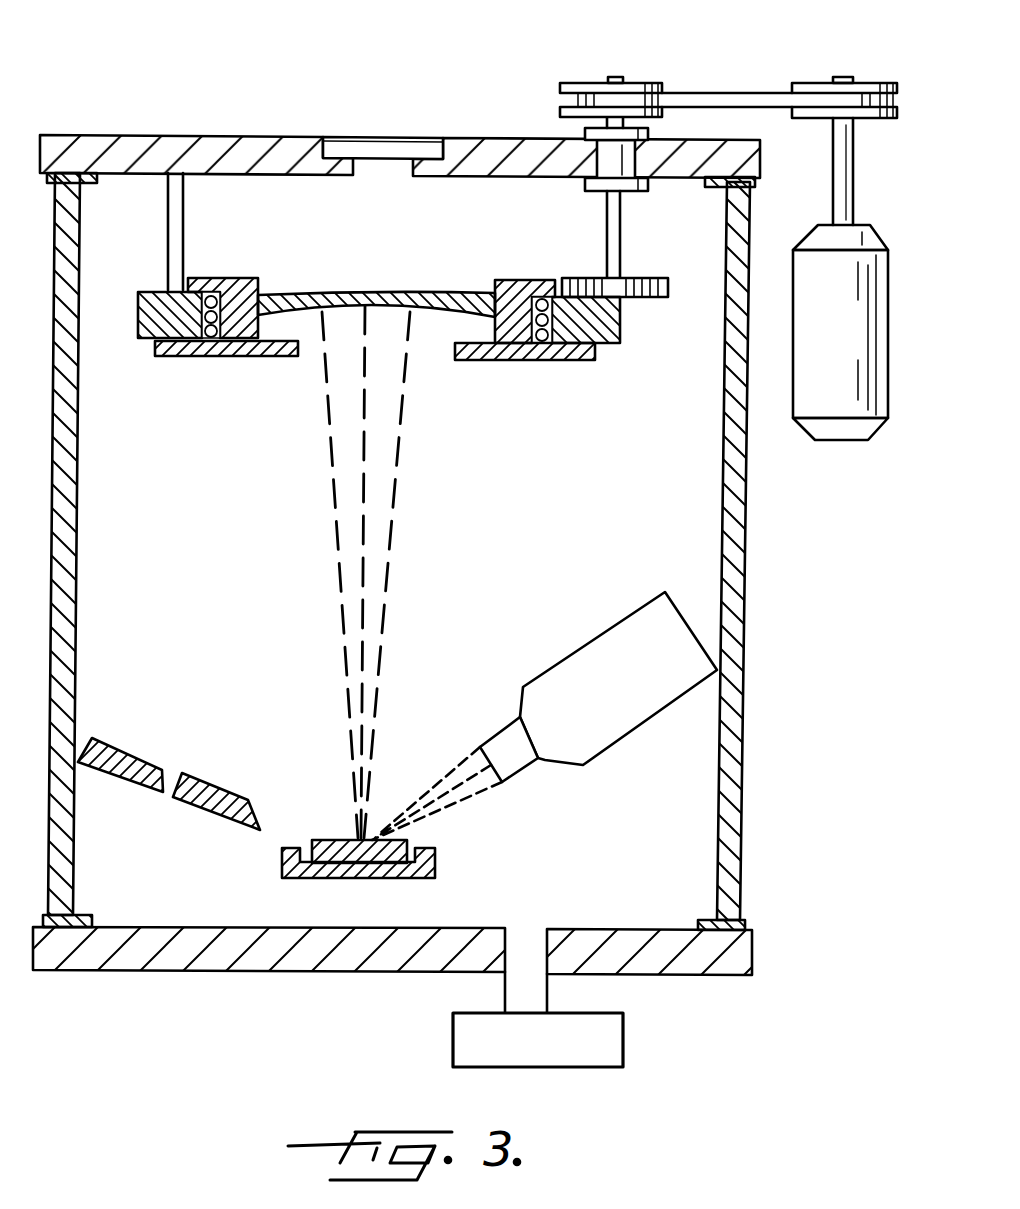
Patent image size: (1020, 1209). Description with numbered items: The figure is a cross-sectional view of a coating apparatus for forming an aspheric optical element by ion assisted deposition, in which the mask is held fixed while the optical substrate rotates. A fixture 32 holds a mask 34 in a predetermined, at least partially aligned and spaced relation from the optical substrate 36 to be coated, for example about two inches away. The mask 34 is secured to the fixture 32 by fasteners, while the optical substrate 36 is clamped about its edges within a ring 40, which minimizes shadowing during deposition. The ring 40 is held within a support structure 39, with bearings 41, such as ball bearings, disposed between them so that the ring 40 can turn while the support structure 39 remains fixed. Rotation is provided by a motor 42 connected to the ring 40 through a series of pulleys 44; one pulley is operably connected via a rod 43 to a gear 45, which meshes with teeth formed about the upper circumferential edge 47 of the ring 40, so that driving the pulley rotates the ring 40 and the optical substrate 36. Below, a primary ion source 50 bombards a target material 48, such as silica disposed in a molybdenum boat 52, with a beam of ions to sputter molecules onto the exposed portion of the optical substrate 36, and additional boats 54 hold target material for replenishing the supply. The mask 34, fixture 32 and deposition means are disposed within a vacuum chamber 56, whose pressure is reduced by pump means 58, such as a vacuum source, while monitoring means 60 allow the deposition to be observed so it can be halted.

The fixture 32 is at (188, 148).
The mask 34 is at (583, 355).
The optical substrate 36 is at (342, 292).
The support structure 39 is at (140, 338).
The ring 40 is at (240, 343).
The bearings 41 is at (198, 343).
The motor 42 is at (827, 393).
The rod 43 is at (620, 218).
The pulleys 44 is at (642, 77).
The gear 45 is at (643, 280).
The upper circumferential edge 47 is at (235, 277).
The target material 48 is at (407, 838).
The primary ion source 50 is at (685, 628).
The boat 52 is at (435, 855).
The additional boats 54 is at (163, 793).
The vacuum chamber 56 is at (742, 775).
The pump means 58 is at (623, 1027).
The monitoring means 60 is at (376, 133).